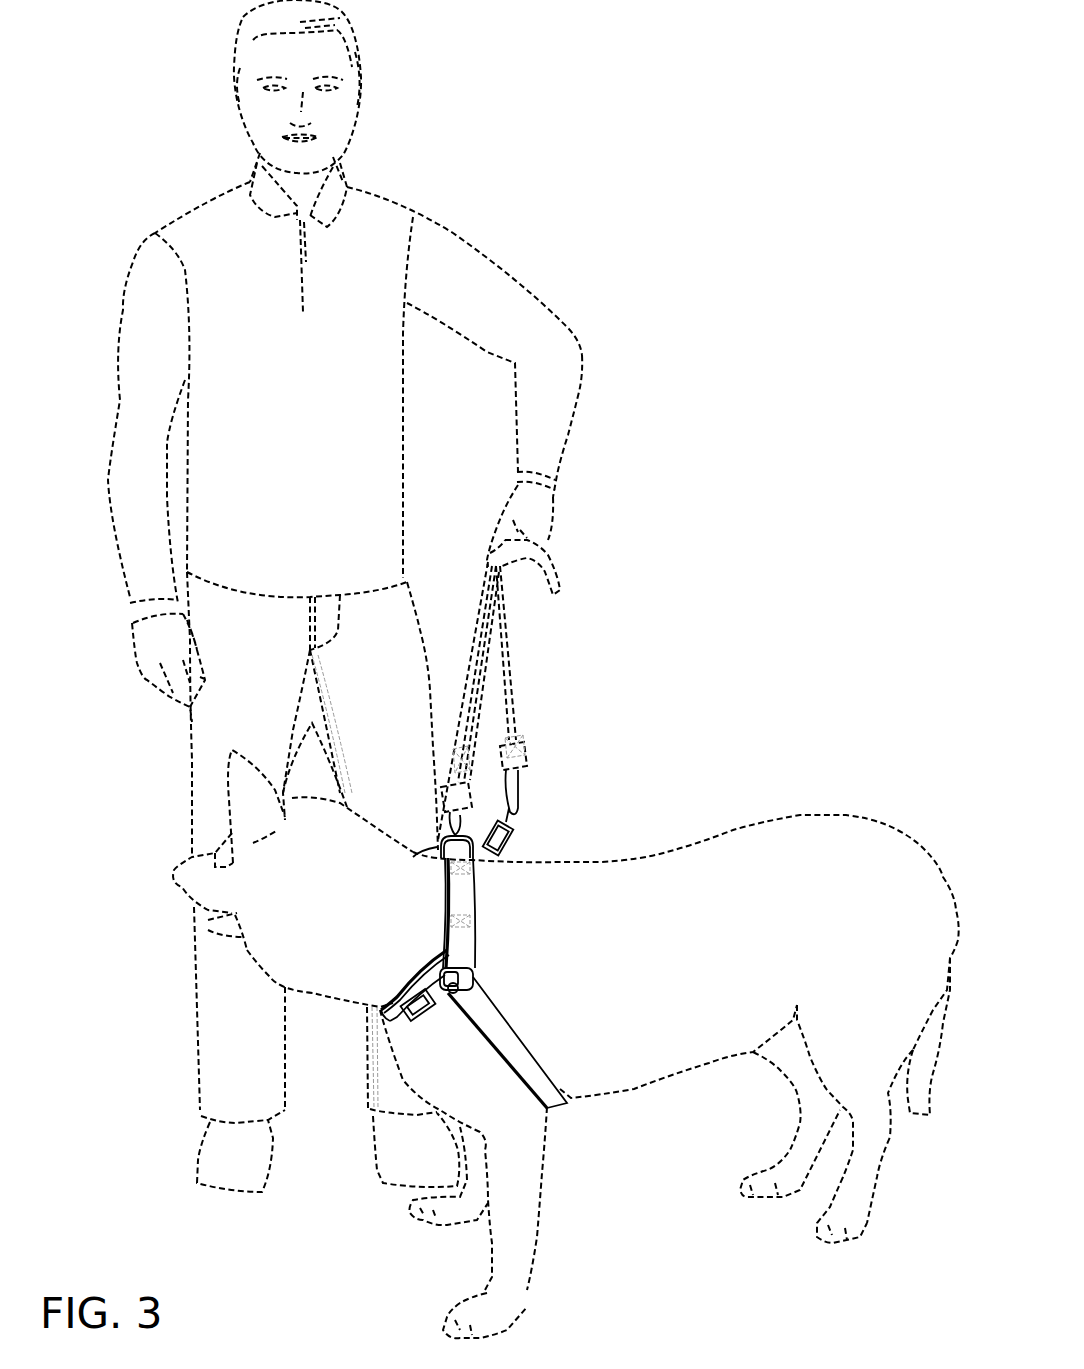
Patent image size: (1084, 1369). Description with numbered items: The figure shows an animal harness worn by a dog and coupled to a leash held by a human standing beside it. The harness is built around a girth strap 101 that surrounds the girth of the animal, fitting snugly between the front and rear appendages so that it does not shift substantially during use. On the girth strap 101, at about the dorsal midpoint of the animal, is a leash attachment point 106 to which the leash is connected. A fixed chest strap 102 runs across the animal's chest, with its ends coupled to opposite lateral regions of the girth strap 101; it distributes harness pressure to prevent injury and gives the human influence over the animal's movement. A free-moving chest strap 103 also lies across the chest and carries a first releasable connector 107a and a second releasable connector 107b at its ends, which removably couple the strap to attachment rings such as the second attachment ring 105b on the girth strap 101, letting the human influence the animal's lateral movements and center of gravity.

The girth strap 101 is at (508, 1040).
The fixed chest strap 102 is at (418, 977).
The free-moving chest strap 103 is at (493, 860).
The second attachment ring 105b is at (473, 978).
The leash attachment point 106 is at (420, 857).
The first releasable connector 107a is at (508, 833).
The second releasable connector 107b is at (432, 1020).